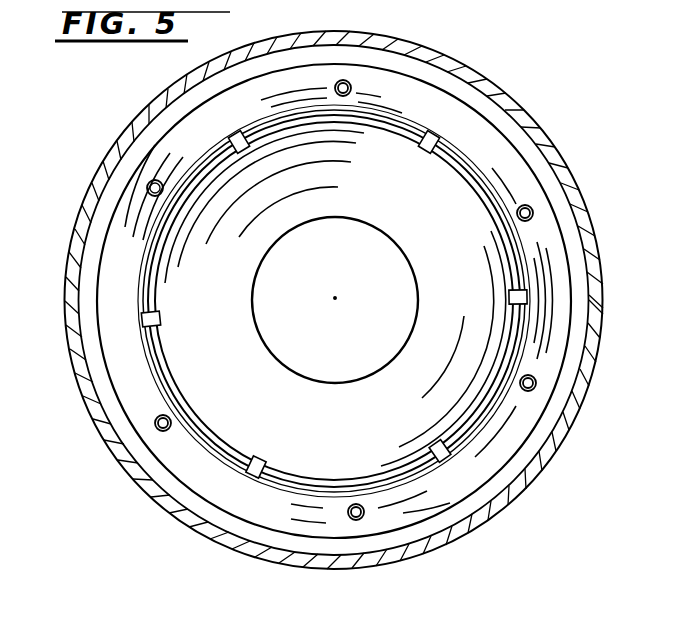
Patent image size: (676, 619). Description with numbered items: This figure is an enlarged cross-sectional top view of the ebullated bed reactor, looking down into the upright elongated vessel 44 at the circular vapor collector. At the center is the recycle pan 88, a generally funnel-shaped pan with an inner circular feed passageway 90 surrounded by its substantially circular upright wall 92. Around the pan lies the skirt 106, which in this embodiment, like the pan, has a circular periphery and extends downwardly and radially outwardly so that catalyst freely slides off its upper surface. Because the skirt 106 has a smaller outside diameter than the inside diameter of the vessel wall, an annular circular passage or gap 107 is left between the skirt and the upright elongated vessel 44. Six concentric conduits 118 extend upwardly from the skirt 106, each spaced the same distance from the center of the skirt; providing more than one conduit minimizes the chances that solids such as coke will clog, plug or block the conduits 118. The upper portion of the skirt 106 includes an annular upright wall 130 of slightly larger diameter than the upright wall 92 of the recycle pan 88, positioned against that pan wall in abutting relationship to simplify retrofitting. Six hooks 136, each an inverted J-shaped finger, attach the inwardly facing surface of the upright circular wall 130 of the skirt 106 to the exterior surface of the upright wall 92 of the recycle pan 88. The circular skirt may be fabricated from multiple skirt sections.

The upright elongated vessel 44 is at (148, 116).
The conduits 118 is at (148, 186).
The annular circular passage or gap 107 is at (282, 63).
The skirt 106 is at (137, 306).
The annular upright wall 130 is at (149, 345).
The upright wall 92 is at (158, 358).
The hook 136 is at (176, 313).
The recycle pan 88 is at (272, 418).
The inner circular feed passageway 90 is at (366, 303).